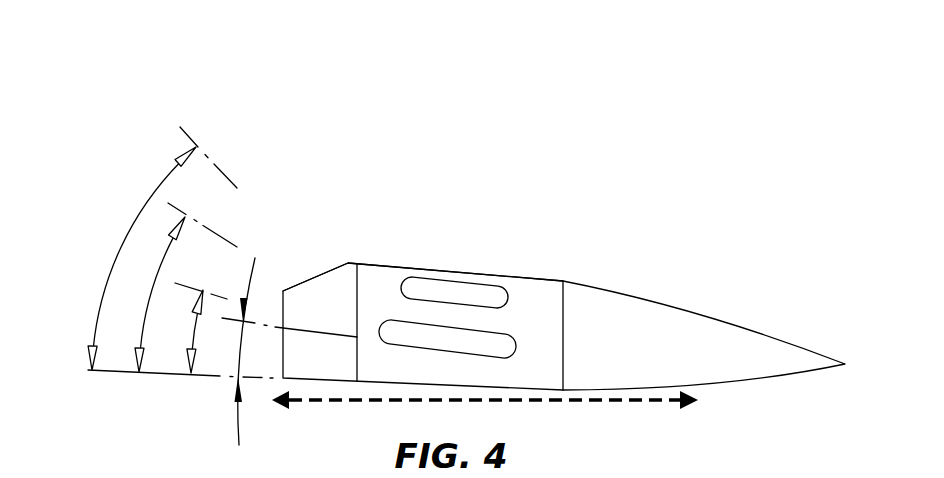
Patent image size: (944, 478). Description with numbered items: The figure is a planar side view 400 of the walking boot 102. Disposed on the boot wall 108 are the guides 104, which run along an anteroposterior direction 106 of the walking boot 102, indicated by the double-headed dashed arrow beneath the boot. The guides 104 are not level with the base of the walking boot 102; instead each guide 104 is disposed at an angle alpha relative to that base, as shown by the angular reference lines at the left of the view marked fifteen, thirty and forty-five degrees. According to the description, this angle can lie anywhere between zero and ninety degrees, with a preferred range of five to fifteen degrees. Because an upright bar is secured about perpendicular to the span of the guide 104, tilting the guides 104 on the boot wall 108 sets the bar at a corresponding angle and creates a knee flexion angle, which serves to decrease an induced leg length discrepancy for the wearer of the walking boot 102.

The planar side view 400 is at (104, 75).
The walking boot 102 is at (595, 222).
The guides 104 is at (472, 283).
The anteroposterior direction 106 is at (353, 400).
The boot wall 108 is at (537, 277).